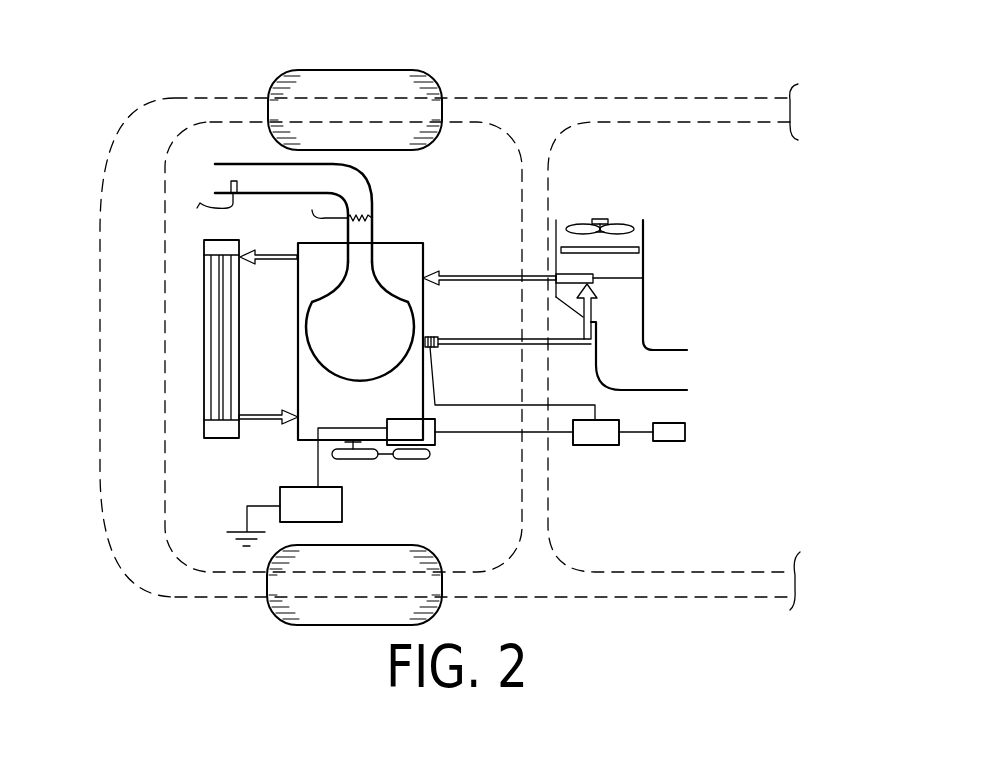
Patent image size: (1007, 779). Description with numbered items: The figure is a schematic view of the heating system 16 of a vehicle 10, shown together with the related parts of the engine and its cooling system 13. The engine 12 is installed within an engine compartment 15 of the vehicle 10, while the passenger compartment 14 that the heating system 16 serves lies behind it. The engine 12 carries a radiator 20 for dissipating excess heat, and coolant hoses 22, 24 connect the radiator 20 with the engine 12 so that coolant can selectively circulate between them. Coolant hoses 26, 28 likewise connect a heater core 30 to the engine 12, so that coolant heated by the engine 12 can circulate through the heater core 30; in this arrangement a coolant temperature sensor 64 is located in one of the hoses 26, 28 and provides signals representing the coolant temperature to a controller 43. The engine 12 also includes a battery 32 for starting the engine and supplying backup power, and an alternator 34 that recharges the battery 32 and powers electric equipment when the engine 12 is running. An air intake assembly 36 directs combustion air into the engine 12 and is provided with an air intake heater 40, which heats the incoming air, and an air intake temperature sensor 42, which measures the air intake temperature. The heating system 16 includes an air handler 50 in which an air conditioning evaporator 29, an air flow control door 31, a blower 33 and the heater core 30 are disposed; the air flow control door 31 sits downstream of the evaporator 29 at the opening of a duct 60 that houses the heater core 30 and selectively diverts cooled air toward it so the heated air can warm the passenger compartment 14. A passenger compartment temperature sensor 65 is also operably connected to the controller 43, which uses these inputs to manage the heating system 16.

The vehicle 10 is at (199, 66).
The engine 12 is at (284, 238).
The cooling system 13 is at (590, 459).
The passenger compartment 14 is at (683, 111).
The engine compartment 15 is at (190, 325).
The heating system 16 is at (657, 320).
The radiator 20 is at (215, 440).
The coolant hose 22 is at (273, 262).
The coolant hose 24 is at (262, 417).
The coolant hose 26 is at (455, 338).
The coolant hose 28 is at (468, 272).
The air conditioning evaporator 29 is at (622, 247).
The heater core 30 is at (580, 273).
The air flow control door 31 is at (612, 280).
The battery 32 is at (342, 503).
The blower 33 is at (577, 224).
The alternator 34 is at (437, 445).
The air intake assembly 36 is at (385, 285).
The air intake heater 40 is at (353, 212).
The air intake temperature sensor 42 is at (231, 186).
The controller 43 is at (600, 447).
The air handler 50 is at (622, 207).
The duct 60 is at (568, 310).
The coolant temperature sensor 64 is at (432, 350).
The passenger compartment temperature sensor 65 is at (668, 441).